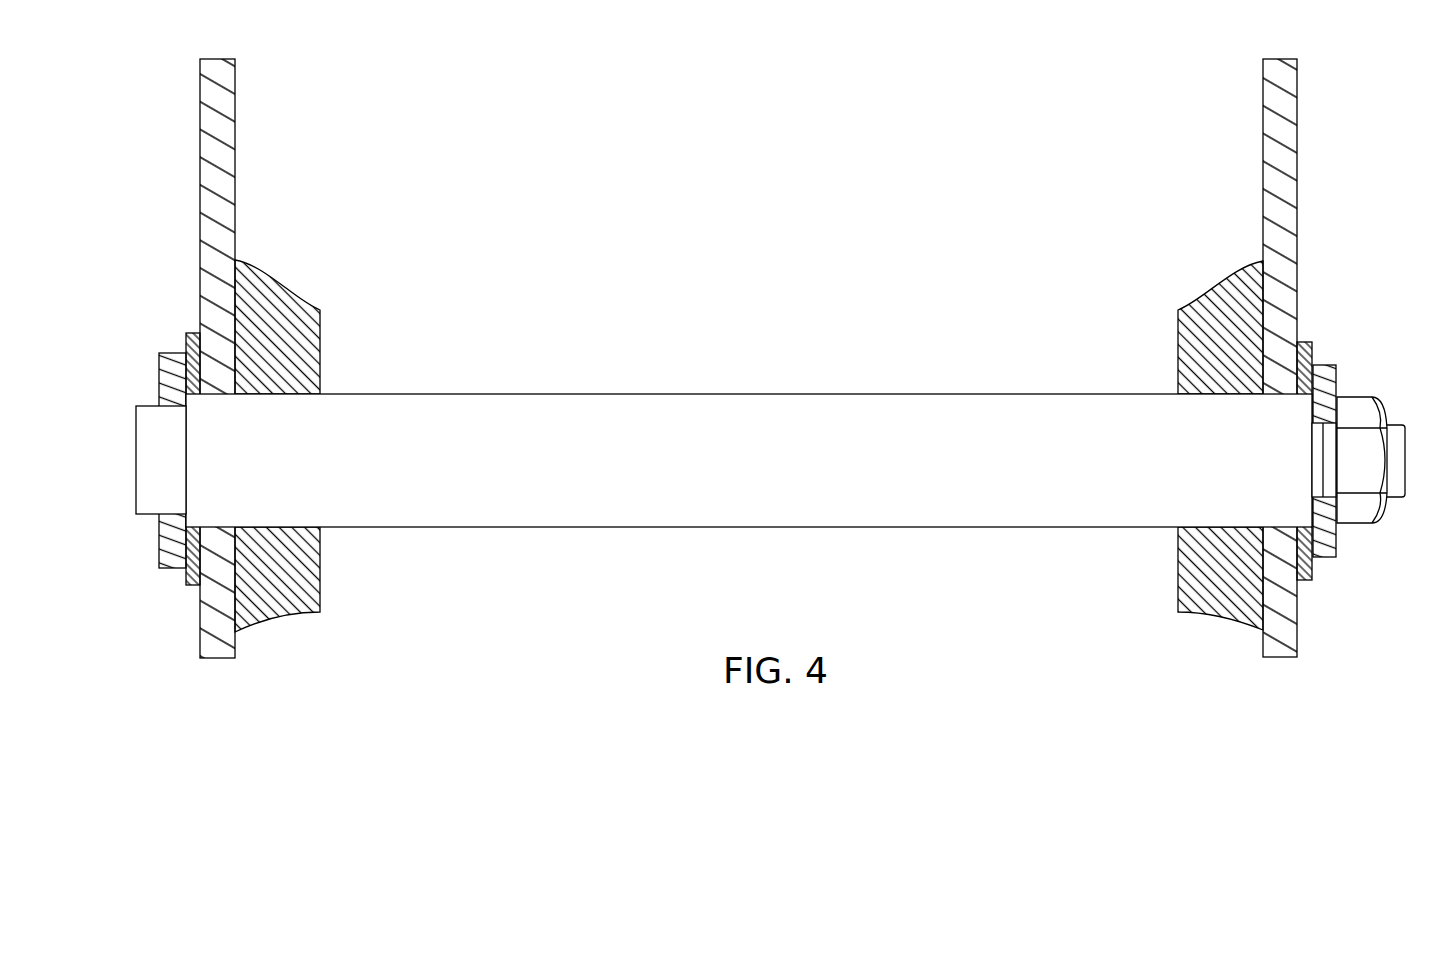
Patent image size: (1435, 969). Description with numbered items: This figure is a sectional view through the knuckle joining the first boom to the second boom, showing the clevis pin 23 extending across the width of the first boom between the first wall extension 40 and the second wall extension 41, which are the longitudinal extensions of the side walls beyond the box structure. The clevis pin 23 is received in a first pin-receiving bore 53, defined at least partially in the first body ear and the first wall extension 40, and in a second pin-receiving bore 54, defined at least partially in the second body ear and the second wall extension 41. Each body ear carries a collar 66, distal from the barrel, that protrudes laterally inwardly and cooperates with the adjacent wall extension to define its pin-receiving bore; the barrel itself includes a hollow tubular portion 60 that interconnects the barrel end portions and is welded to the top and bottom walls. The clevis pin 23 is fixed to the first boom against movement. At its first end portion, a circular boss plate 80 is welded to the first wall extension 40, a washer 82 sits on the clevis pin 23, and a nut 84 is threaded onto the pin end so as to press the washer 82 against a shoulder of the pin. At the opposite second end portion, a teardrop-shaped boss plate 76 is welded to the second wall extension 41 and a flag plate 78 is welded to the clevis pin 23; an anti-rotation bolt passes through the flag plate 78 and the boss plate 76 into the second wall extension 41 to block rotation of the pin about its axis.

The clevis pin 23 is at (385, 392).
The first wall extension 40 is at (1275, 150).
The second wall extension 41 is at (220, 145).
The first pin-receiving bore 53 is at (1225, 527).
The second pin-receiving bore 54 is at (273, 528).
The tubular portion 60 is at (320, 323).
The collar 66 is at (1178, 326).
The teardrop-shaped boss plate 76 is at (193, 585).
The flag plate 78 is at (169, 568).
The circular boss plate 80 is at (1302, 583).
The washer 82 is at (1325, 548).
The nut 84 is at (1357, 512).